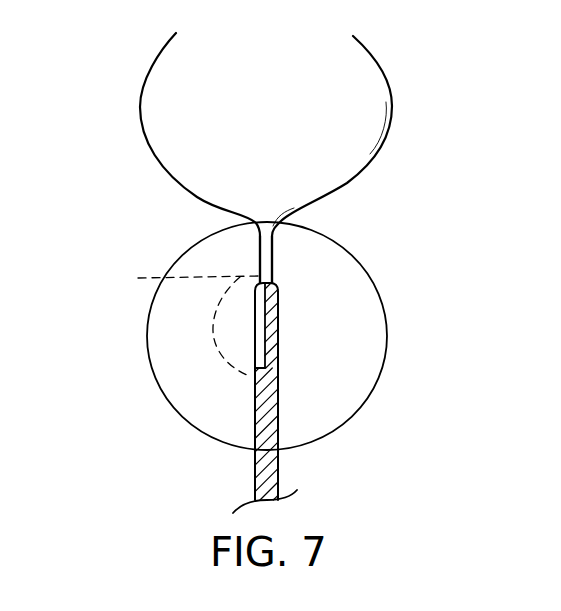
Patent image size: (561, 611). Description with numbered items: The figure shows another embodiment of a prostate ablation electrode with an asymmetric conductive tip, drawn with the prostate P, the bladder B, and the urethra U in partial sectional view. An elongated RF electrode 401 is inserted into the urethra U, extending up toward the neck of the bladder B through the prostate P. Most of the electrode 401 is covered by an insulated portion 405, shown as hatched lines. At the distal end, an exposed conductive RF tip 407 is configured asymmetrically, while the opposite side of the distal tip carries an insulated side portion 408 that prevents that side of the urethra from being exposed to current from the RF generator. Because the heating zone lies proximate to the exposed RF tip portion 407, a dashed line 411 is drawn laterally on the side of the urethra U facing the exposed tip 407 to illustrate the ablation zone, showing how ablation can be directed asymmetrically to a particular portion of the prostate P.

The bladder B is at (160, 52).
The urethra U is at (258, 252).
The prostate P is at (333, 230).
The RF electrode 401 is at (280, 477).
The insulated portion 405 is at (267, 405).
The exposed conductive RF tip 407 is at (260, 331).
The insulated side portion 408 is at (277, 320).
The dashed line 411 is at (138, 277).